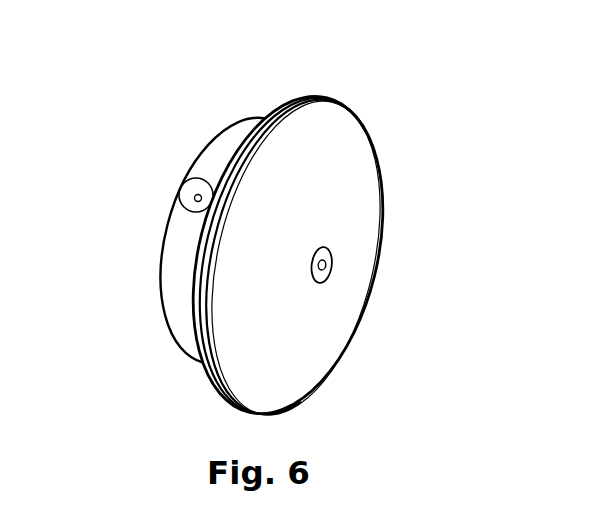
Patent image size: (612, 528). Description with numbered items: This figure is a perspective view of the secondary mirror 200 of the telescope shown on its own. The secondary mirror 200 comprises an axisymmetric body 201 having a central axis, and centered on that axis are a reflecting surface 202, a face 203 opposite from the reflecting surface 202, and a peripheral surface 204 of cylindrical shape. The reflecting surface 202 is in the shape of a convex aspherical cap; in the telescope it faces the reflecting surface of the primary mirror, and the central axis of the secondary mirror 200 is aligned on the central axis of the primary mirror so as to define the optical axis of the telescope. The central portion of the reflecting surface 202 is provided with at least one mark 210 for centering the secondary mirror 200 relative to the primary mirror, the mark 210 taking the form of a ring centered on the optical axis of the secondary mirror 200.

The secondary mirror 200 is at (275, 100).
The axisymmetric body 201 is at (175, 283).
The reflecting surface 202 is at (342, 168).
The face 203 is at (189, 159).
The peripheral surface 204 is at (182, 242).
The mark 210 is at (332, 265).